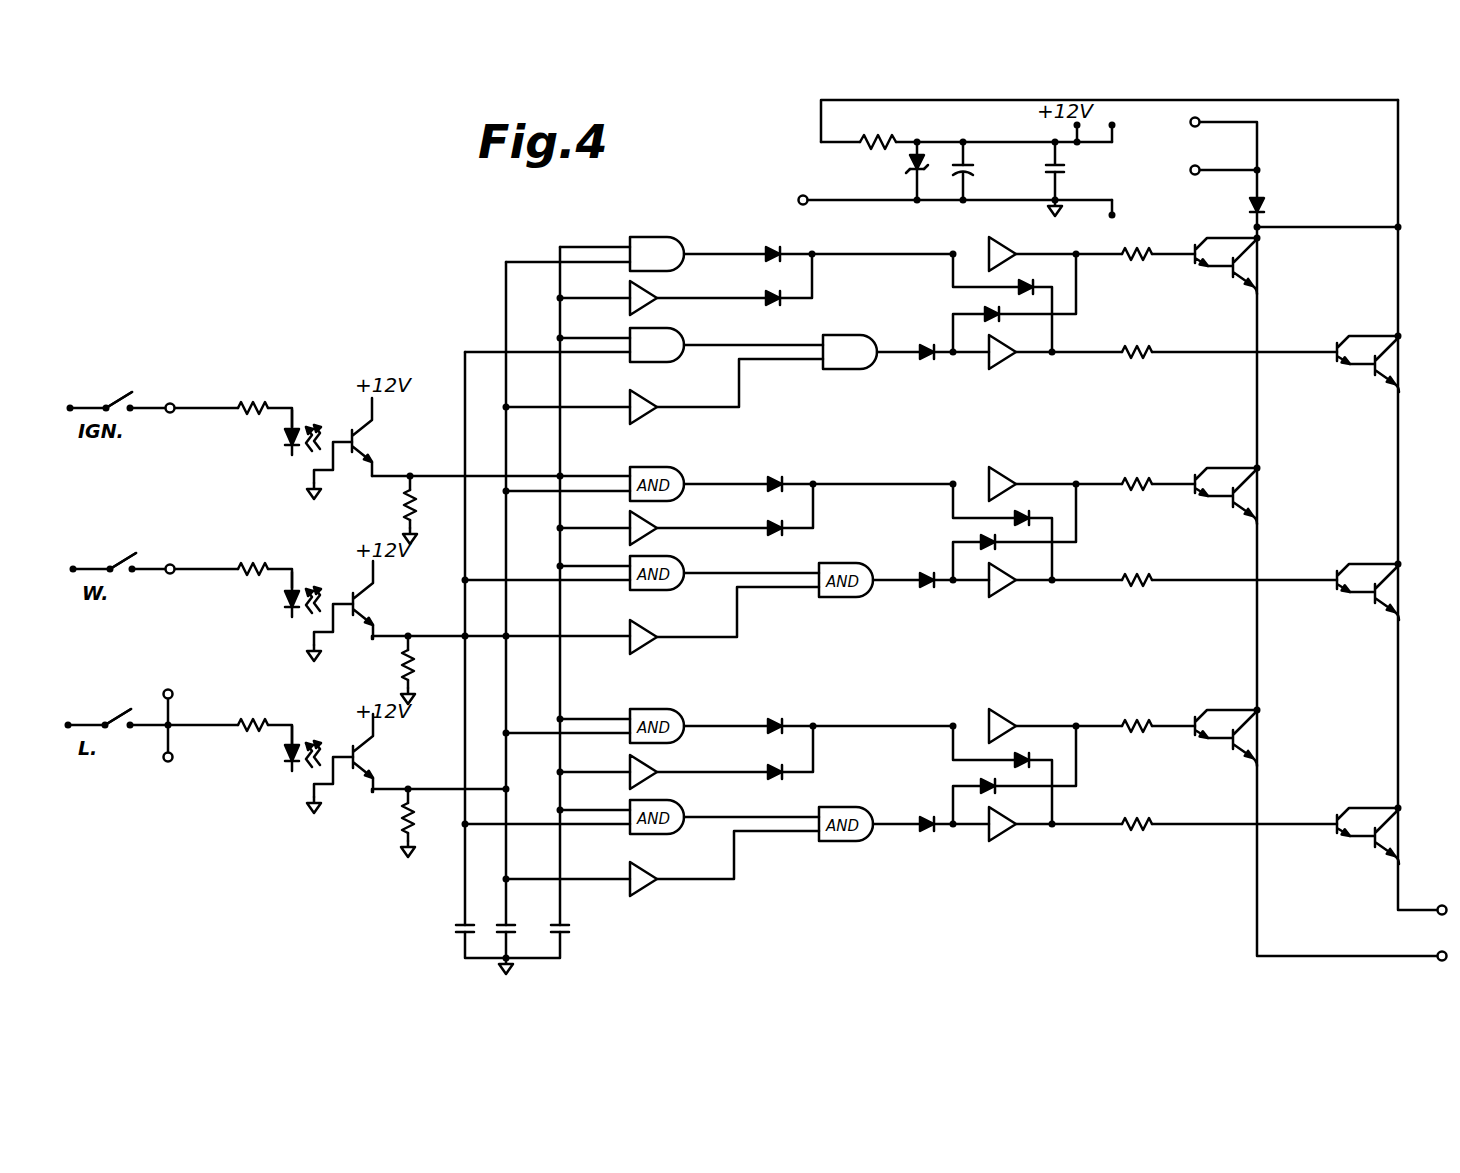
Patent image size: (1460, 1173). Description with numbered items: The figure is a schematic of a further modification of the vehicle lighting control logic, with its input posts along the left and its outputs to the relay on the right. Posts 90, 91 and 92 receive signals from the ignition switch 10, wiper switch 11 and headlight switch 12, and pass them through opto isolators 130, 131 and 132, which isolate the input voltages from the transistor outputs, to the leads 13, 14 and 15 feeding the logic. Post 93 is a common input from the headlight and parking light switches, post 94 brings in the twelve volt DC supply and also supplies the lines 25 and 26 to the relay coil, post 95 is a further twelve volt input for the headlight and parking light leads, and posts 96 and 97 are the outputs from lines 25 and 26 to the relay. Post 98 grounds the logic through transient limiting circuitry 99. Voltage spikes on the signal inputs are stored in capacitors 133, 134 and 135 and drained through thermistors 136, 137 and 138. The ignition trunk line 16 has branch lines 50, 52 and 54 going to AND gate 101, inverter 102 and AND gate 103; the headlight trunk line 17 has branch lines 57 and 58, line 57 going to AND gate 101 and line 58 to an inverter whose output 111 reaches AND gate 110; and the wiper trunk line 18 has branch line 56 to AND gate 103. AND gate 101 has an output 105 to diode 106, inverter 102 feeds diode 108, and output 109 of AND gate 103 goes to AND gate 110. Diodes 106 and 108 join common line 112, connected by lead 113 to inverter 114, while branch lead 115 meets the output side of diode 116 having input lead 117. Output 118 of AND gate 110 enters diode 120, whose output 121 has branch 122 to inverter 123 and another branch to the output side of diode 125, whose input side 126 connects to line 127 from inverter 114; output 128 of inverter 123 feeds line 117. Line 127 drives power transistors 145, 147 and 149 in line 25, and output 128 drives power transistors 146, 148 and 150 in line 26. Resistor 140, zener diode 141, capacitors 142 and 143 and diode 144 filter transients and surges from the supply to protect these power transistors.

The ignition switch 10 is at (118, 402).
The wiper switch 11 is at (118, 565).
The headlight switch 12 is at (112, 718).
The lead 13 is at (378, 475).
The lead 14 is at (382, 636).
The lead 15 is at (380, 790).
The trunk line 16 is at (563, 382).
The trunk line 17 is at (506, 292).
The trunk line 18 is at (463, 398).
The output line 25 is at (1260, 312).
The output line 26 is at (1398, 275).
The branch line 50 is at (606, 226).
The branch line 52 is at (601, 286).
The branch line 54 is at (601, 331).
The branch line 56 is at (478, 322).
The branch line 57 is at (541, 243).
The branch line 58 is at (509, 411).
The post 90 is at (188, 388).
The post 91 is at (186, 549).
The post 92 is at (184, 674).
The post 93 is at (165, 762).
The post 94 is at (1190, 122).
The post 95 is at (1191, 167).
The post 96 is at (1440, 951).
The post 97 is at (1440, 905).
The post 98 is at (797, 201).
The transient limiting circuitry 99 is at (926, 212).
The AND gate 101 is at (680, 240).
The inverter 102 is at (662, 297).
The AND gate 103 is at (676, 340).
The output 105 is at (748, 240).
The diode 106 is at (800, 240).
The diode 108 is at (775, 306).
The output 109 is at (712, 350).
The AND gate 110 is at (836, 369).
The output 111 is at (750, 372).
The common line 112 is at (871, 257).
The lead 113 is at (957, 252).
The inverter 114 is at (1012, 230).
The branch lead 115 is at (953, 278).
The diode 116 is at (1043, 280).
The input lead 117 is at (1058, 329).
The output 118 is at (881, 345).
The diode 120 is at (927, 361).
The output 121 is at (946, 352).
The branch 122 is at (954, 366).
The inverter 123 is at (1012, 376).
The diode 125 is at (986, 318).
The input side 126 is at (1080, 284).
The line 127 is at (1066, 258).
The output 128 is at (1096, 356).
The opto isolator 130 is at (318, 414).
The opto isolator 131 is at (332, 542).
The opto isolator 132 is at (337, 702).
The capacitor 133 is at (568, 940).
The capacitor 134 is at (540, 919).
The capacitor 135 is at (462, 942).
The thermistor 136 is at (403, 504).
The thermistor 137 is at (402, 665).
The thermistor 138 is at (402, 822).
The resistor 140 is at (890, 141).
The zener diode 141 is at (906, 168).
The capacitor 142 is at (974, 172).
The capacitor 143 is at (1067, 168).
The diode 144 is at (1266, 206).
The power transistor 145 is at (1226, 280).
The power transistor 146 is at (1360, 398).
The power transistor 147 is at (1201, 516).
The power transistor 148 is at (1350, 622).
The power transistor 149 is at (1191, 766).
The power transistor 150 is at (1340, 810).